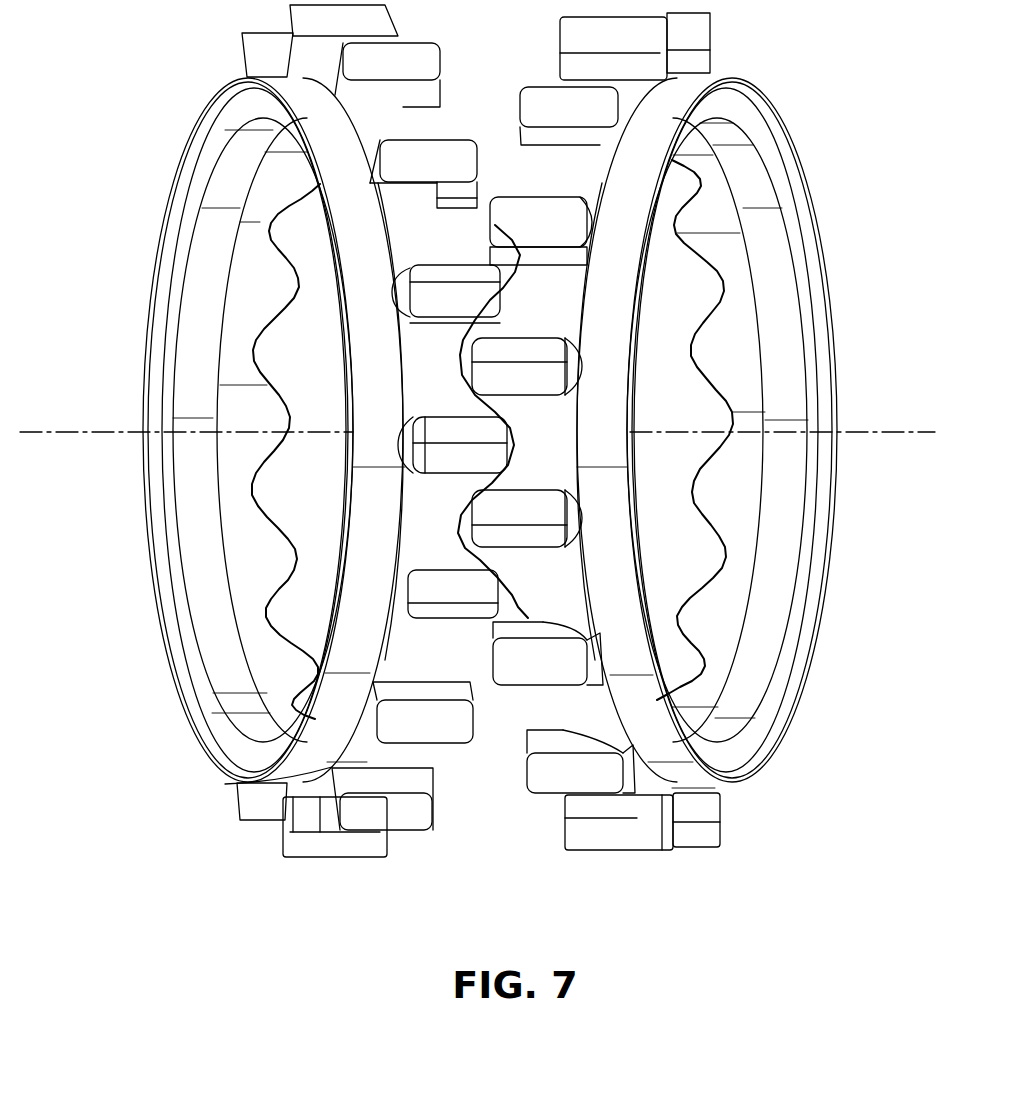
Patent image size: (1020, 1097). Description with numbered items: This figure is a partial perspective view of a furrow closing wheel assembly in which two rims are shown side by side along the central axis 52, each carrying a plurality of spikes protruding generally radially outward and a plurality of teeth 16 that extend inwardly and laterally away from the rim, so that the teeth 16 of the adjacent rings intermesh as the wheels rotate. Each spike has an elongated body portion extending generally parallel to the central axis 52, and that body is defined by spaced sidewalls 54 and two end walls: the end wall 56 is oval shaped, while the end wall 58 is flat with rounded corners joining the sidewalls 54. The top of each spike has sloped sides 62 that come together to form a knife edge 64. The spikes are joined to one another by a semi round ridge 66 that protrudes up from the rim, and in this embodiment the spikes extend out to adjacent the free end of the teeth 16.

The teeth 16 is at (268, 290).
The central axis 52 is at (30, 425).
The sidewalls 54 is at (527, 133).
The end wall 56 is at (578, 368).
The end wall 58 is at (505, 213).
The sloped sides 62 is at (575, 235).
The knife edge 64 is at (577, 196).
The semi round ridge 66 is at (415, 497).